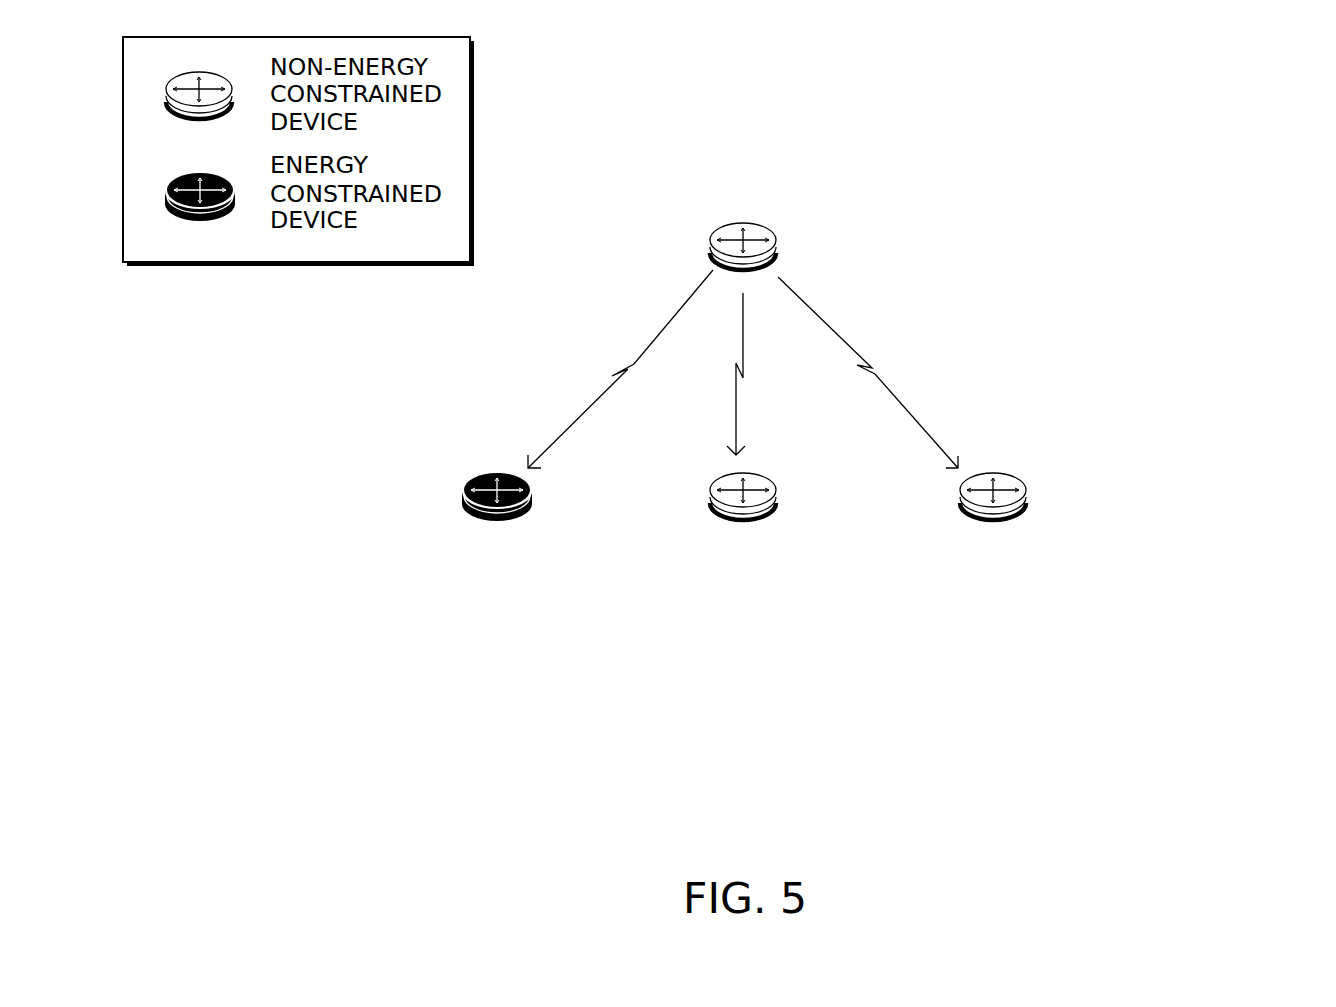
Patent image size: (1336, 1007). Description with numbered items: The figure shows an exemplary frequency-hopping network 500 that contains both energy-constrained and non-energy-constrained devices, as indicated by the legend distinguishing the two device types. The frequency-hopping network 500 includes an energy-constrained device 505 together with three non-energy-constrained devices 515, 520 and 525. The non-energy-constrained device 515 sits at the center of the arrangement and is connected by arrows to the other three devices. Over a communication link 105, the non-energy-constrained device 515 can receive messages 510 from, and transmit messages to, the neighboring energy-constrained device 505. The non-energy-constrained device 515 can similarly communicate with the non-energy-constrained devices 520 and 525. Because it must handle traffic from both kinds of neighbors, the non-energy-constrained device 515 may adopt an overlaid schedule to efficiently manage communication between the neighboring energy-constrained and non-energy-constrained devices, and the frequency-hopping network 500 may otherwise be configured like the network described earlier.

The frequency-hopping network 500 is at (1270, 98).
The energy-constrained device 505 is at (497, 513).
The messages 510 is at (635, 307).
The non-energy-constrained device 515 is at (743, 228).
The non-energy-constrained device 520 is at (743, 514).
The non-energy-constrained device 525 is at (993, 514).
The communication link 105 is at (920, 400).